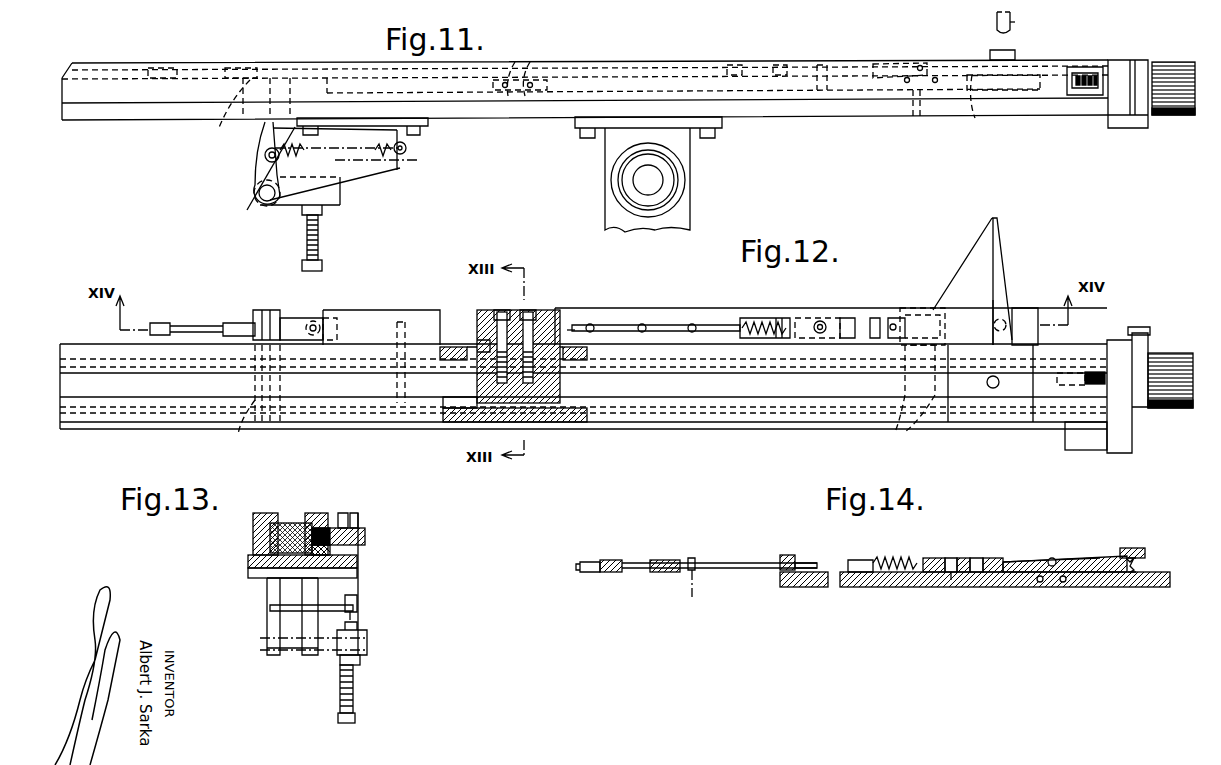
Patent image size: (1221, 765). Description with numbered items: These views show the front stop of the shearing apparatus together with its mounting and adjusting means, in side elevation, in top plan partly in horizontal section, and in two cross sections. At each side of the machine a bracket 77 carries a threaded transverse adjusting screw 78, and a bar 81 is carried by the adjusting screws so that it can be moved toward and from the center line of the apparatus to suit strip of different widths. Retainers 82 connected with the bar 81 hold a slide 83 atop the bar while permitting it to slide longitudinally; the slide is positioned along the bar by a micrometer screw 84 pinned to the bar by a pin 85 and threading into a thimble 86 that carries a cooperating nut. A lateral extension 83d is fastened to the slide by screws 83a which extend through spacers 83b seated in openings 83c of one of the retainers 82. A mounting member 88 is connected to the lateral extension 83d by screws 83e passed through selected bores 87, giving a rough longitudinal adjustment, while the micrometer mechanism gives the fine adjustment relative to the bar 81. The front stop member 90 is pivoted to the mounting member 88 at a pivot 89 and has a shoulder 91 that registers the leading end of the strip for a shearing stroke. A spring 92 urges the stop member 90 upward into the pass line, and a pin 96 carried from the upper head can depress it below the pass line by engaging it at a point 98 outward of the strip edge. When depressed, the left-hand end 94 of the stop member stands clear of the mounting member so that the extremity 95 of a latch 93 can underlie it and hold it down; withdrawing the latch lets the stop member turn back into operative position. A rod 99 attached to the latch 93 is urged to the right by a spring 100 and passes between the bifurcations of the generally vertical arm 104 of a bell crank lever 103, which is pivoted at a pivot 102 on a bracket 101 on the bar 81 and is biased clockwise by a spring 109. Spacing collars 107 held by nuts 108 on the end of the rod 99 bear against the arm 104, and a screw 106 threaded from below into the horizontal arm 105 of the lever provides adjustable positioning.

In FIG. 11, the bracket 77 is at (692, 208).
In FIG. 11, the transverse adjusting screw 78 is at (655, 180).
In FIG. 11, the bar 81 is at (855, 105).
In FIG. 12, the bar 81 is at (680, 428).
In FIG. 13, the bar 81 is at (248, 562).
In FIG. 11, the retainer 82 is at (800, 100).
In FIG. 12, the retainer 82 is at (600, 397).
In FIG. 13, the retainer 82 is at (315, 514).
In FIG. 12, the slide 83 is at (550, 410).
In FIG. 13, the slide 83 is at (270, 540).
In FIG. 11, the screw 83a is at (518, 66).
In FIG. 12, the screw 83a is at (528, 312).
In FIG. 14, the screw 83a is at (1064, 584).
In FIG. 11, the spacer 83b is at (522, 97).
In FIG. 12, the spacer 83b is at (560, 315).
In FIG. 13, the spacer 83b is at (330, 536).
In FIG. 12, the opening 83c is at (485, 330).
In FIG. 13, the opening 83c is at (325, 550).
In FIG. 11, the lateral extension 83d is at (455, 97).
In FIG. 12, the lateral extension 83d is at (405, 312).
In FIG. 13, the lateral extension 83d is at (365, 536).
In FIG. 14, the lateral extension 83d is at (818, 588).
In FIG. 11, the screw 83e is at (820, 66).
In FIG. 12, the screw 83e is at (820, 320).
In FIG. 14, the screw 83e is at (952, 588).
In FIG. 12, the micrometer screw 84 is at (1100, 385).
In FIG. 12, the pin 85 is at (1068, 405).
In FIG. 11, the thimble 86 is at (1163, 113).
In FIG. 12, the thimble 86 is at (1165, 352).
In FIG. 12, the bore 87 is at (642, 320).
In FIG. 14, the bore 87 is at (880, 588).
In FIG. 12, the mounting member 88 is at (770, 316).
In FIG. 14, the mounting member 88 is at (940, 557).
In FIG. 14, the pivot 89 is at (1052, 558).
In FIG. 11, the front stop member 90 is at (974, 100).
In FIG. 12, the front stop member 90 is at (962, 260).
In FIG. 14, the front stop member 90 is at (1093, 575).
In FIG. 11, the shoulder 91 is at (990, 53).
In FIG. 12, the shoulder 91 is at (985, 255).
In FIG. 14, the shoulder 91 is at (1120, 550).
In FIG. 12, the spring 92 is at (1010, 310).
In FIG. 14, the spring 92 is at (1138, 566).
In FIG. 11, the latch 93 is at (1085, 81).
In FIG. 12, the latch 93 is at (855, 318).
In FIG. 14, the latch 93 is at (995, 557).
In FIG. 12, the left-hand end 94 is at (888, 318).
In FIG. 14, the left-hand end 94 is at (1030, 557).
In FIG. 12, the extremity 95 is at (878, 318).
In FIG. 14, the extremity 95 is at (1005, 572).
In FIG. 11, the detent or pin 96 is at (1012, 20).
In FIG. 12, the point 98 is at (994, 325).
In FIG. 12, the rod 99 is at (372, 312).
In FIG. 13, the rod 99 is at (343, 512).
In FIG. 14, the rod 99 is at (812, 558).
In FIG. 12, the spring 100 is at (752, 340).
In FIG. 14, the spring 100 is at (893, 558).
In FIG. 11, the bracket 101 is at (375, 174).
In FIG. 13, the bracket 101 is at (302, 592).
In FIG. 11, the pivot 102 is at (265, 196).
In FIG. 12, the pivot 102 is at (235, 432).
In FIG. 13, the pivot 102 is at (360, 657).
In FIG. 11, the bell crank lever 103 is at (256, 165).
In FIG. 12, the bell crank lever 103 is at (286, 316).
In FIG. 13, the bell crank lever 103 is at (360, 626).
In FIG. 11, the bifurcated arm 104 is at (222, 125).
In FIG. 12, the bifurcated arm 104 is at (268, 310).
In FIG. 13, the bifurcated arm 104 is at (360, 520).
In FIG. 14, the bifurcated arm 104 is at (688, 572).
In FIG. 11, the arm 105 is at (328, 205).
In FIG. 13, the arm 105 is at (366, 642).
In FIG. 11, the screw 106 is at (307, 240).
In FIG. 12, the screw 106 is at (315, 320).
In FIG. 13, the screw 106 is at (354, 688).
In FIG. 12, the spacing collar 107 is at (218, 322).
In FIG. 14, the spacing collar 107 is at (665, 558).
In FIG. 12, the nut 108 is at (165, 322).
In FIG. 14, the nut 108 is at (588, 560).
In FIG. 11, the spring 109 is at (400, 160).
In FIG. 13, the spring 109 is at (358, 598).